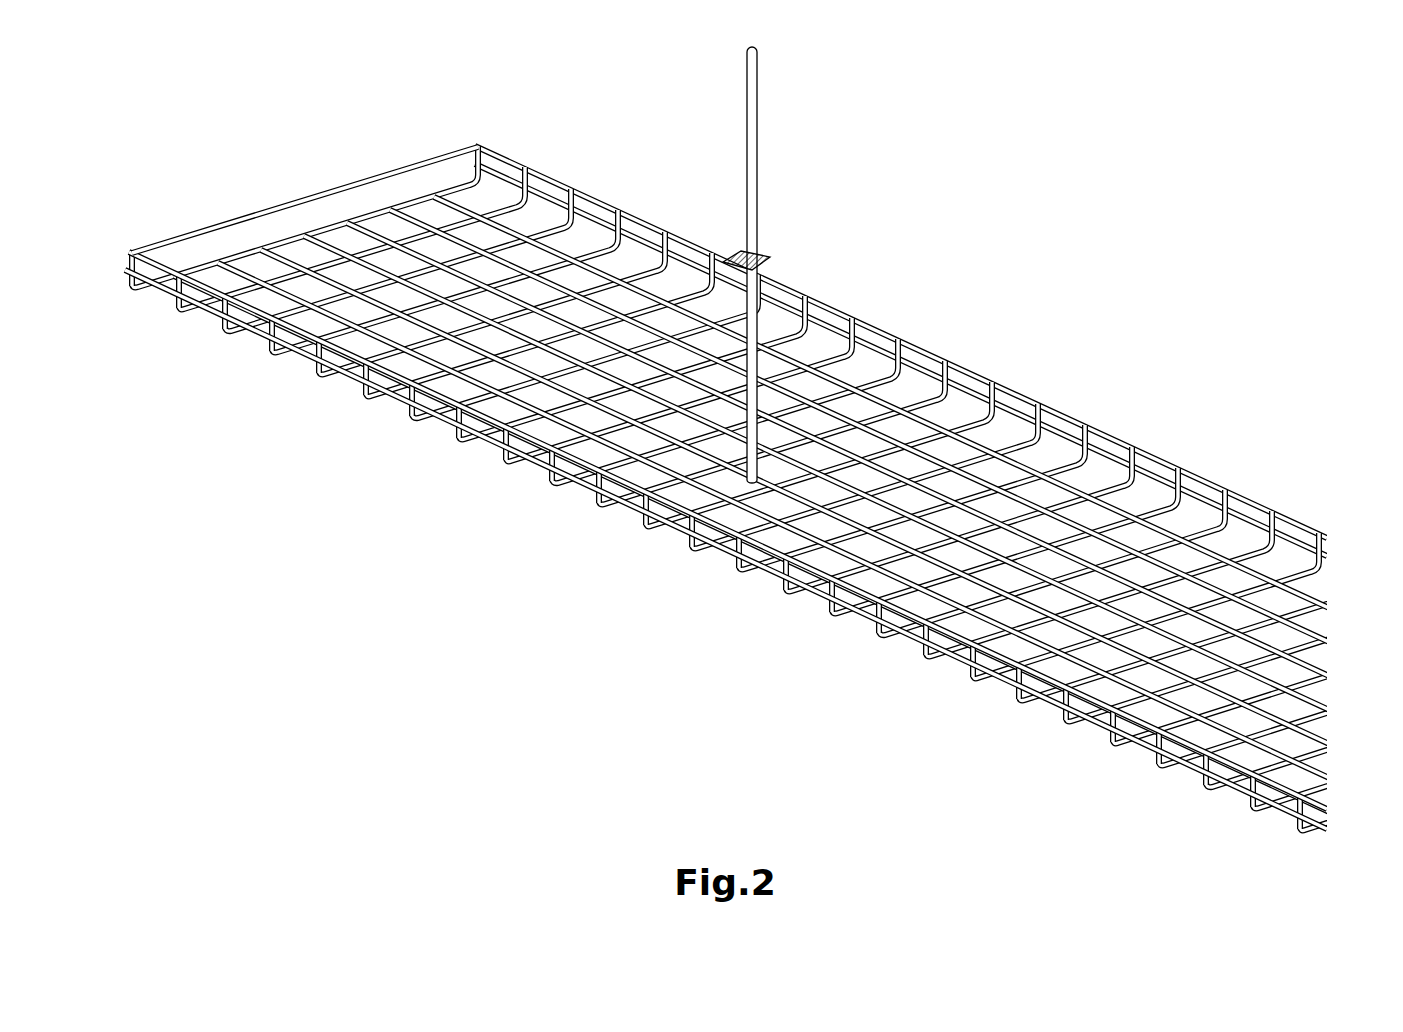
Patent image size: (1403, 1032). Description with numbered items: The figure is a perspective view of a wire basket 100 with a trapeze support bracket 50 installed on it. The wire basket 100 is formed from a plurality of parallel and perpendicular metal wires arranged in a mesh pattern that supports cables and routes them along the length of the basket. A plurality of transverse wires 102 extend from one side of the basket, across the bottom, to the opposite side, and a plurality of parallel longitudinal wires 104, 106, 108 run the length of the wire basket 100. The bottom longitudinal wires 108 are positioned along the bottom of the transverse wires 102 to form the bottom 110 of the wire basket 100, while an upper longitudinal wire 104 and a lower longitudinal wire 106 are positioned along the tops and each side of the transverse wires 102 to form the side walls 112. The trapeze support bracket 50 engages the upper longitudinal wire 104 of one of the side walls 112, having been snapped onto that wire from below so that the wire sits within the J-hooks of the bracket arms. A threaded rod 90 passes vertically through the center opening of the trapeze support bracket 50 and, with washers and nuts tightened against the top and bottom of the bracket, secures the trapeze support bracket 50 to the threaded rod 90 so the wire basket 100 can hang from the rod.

The wire basket 100 is at (764, 474).
The transverse wires 102 is at (997, 390).
The upper longitudinal wire 104 is at (317, 358).
The lower longitudinal wire 106 is at (345, 380).
The bottom longitudinal wires 108 is at (573, 421).
The bottom 110 is at (265, 247).
The side walls 112 is at (268, 341).
The threaded rod 90 is at (758, 130).
The trapeze support bracket 50 is at (796, 227).